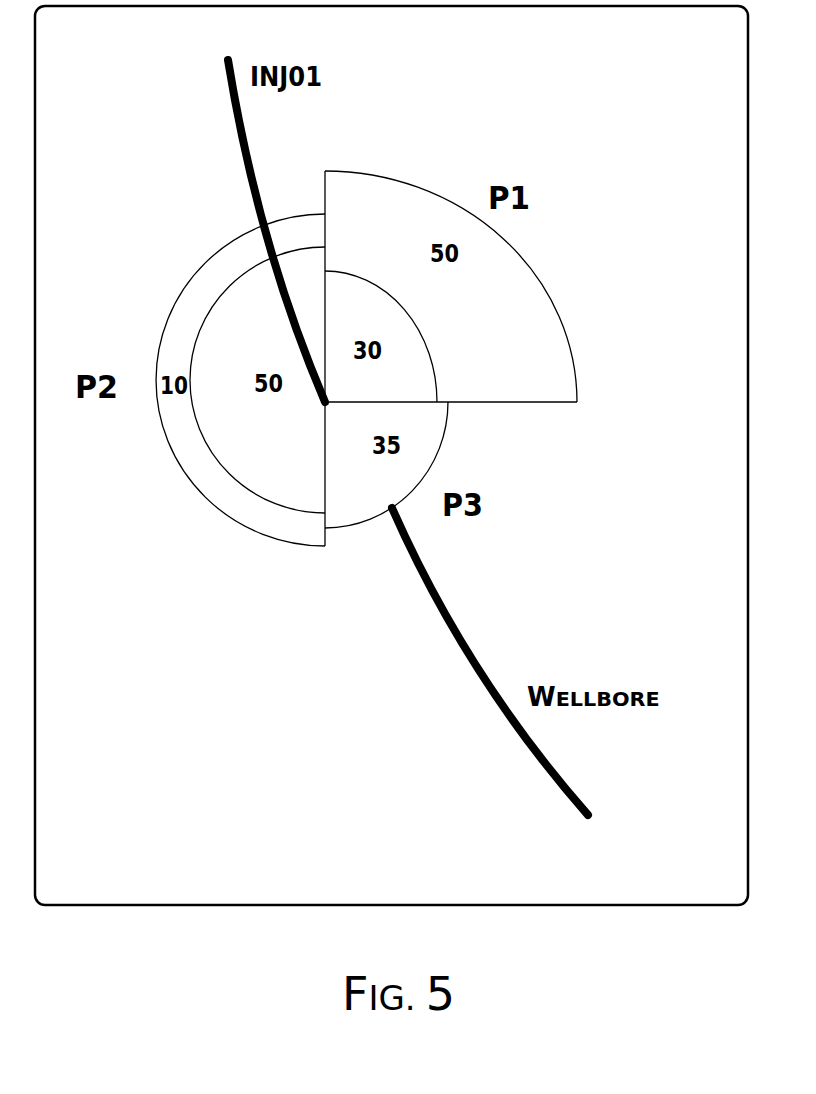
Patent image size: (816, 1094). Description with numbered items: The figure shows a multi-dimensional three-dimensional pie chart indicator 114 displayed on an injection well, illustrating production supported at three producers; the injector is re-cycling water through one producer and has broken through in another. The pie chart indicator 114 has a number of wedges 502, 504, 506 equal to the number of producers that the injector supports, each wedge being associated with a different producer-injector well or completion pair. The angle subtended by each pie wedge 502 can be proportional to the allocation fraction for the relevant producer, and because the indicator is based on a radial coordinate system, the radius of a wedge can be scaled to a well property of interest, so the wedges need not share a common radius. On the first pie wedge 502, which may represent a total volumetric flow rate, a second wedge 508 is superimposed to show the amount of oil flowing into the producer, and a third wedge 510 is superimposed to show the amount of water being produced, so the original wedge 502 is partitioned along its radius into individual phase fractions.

The pie chart indicator 114 is at (175, 183).
The pie wedge 502 is at (519, 251).
The pie wedge 504 is at (218, 510).
The pie wedge 506 is at (447, 443).
The second wedge 508 is at (398, 375).
The third wedge 510 is at (487, 293).